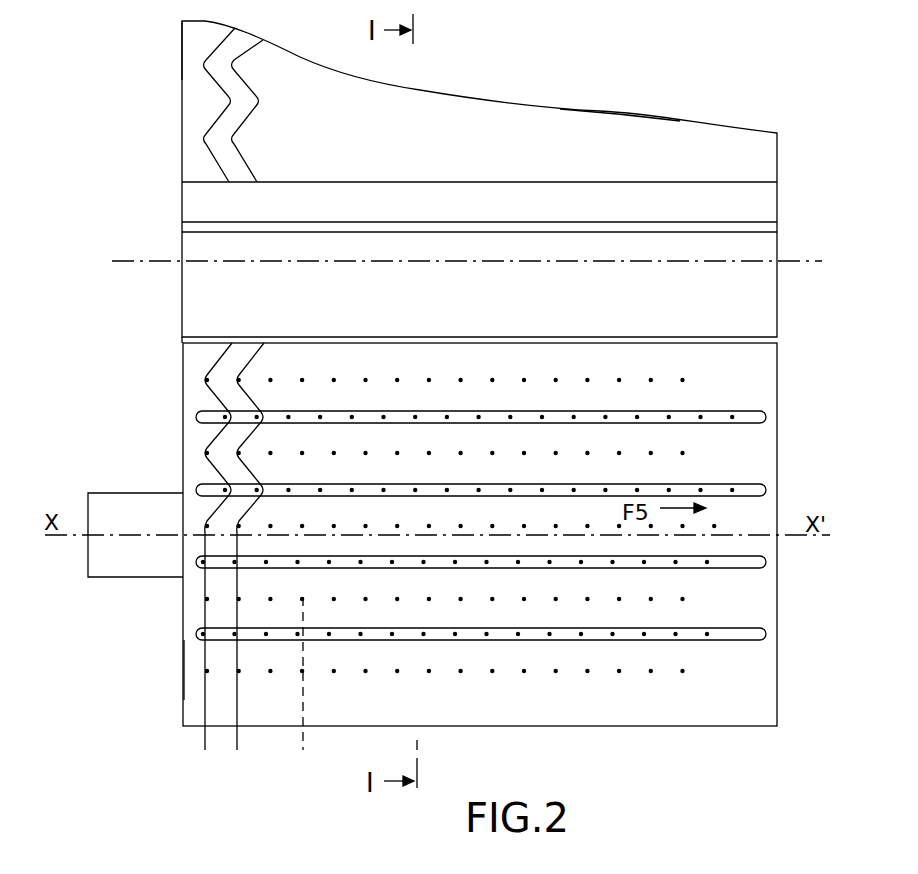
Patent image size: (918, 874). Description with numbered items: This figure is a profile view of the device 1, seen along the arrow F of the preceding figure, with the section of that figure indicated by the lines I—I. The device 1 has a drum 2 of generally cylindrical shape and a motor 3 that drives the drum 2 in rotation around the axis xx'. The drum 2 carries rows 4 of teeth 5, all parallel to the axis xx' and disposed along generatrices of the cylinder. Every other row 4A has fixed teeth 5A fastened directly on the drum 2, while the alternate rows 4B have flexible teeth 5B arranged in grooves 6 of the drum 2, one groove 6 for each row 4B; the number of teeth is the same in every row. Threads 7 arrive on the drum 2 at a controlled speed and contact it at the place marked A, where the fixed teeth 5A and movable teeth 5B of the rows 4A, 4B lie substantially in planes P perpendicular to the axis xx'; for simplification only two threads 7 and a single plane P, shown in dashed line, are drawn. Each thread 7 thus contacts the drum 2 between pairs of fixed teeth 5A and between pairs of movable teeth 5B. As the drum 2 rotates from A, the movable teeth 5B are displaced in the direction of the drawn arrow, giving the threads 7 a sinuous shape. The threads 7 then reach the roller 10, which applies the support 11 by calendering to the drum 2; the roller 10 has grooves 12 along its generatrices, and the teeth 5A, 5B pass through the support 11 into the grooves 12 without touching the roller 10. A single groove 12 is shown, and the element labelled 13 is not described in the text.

The device 1 is at (152, 134).
The drum 2 is at (183, 400).
The motor 3 is at (120, 493).
The rows of teeth 4 is at (714, 598).
The rows of fixed teeth 4A is at (708, 451).
The rows of flexible teeth 4B is at (579, 636).
The teeth 5 is at (677, 636).
The fixed teeth 5A is at (706, 377).
The flexible teeth 5B is at (487, 636).
The grooves 6 is at (745, 628).
The threads 7 is at (248, 82).
The roller 10 is at (777, 201).
The support 11 is at (627, 112).
The grooves 12 is at (356, 222).
The blade root 13 is at (180, 64).
The place of thread arrival A is at (198, 672).
The planes P is at (304, 736).